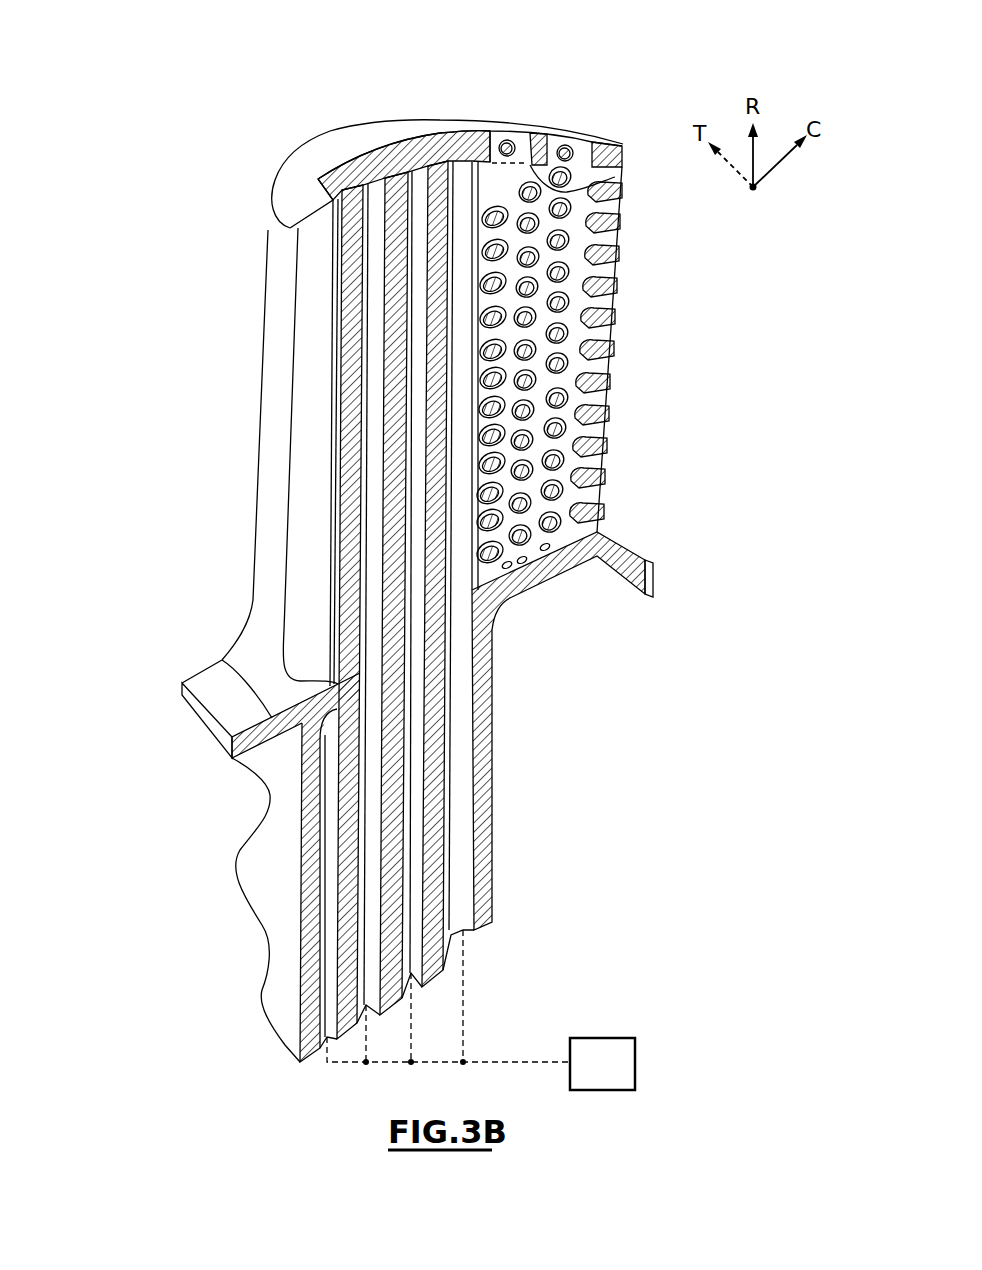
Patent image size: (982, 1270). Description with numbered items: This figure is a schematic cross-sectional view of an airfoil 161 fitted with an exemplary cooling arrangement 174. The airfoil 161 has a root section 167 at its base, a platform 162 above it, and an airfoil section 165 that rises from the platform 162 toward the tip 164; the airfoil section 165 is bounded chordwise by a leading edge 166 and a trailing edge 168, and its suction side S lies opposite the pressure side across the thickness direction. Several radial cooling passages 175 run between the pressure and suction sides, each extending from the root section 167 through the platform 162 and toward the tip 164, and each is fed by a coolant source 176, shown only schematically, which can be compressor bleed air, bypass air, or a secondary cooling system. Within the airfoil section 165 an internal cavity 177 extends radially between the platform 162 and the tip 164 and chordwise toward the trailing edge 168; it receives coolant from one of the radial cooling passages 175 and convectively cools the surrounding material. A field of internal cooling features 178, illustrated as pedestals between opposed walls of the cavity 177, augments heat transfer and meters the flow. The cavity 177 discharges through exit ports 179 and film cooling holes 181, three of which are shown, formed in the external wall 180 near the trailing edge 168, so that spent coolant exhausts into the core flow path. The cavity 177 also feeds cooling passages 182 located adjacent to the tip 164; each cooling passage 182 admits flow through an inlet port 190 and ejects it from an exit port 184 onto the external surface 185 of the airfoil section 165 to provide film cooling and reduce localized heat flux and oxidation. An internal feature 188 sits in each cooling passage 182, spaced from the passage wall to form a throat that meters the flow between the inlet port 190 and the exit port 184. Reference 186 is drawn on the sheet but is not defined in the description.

The airfoil 161 is at (146, 112).
The platform 162 is at (225, 740).
The tip 164 is at (283, 197).
The airfoil section 165 is at (242, 432).
The leading edge 166 is at (264, 288).
The root section 167 is at (272, 998).
The trailing edge 168 is at (612, 320).
The cooling arrangement 174 is at (498, 46).
The radial cooling passage 175 is at (450, 905).
The coolant source 176 is at (627, 1079).
The internal cavity 177 is at (545, 555).
The internal cooling feature 178 is at (565, 430).
The exit port 179 is at (600, 466).
The external wall 180 is at (600, 446).
The film cooling hole 181 is at (508, 570).
The cooling passage 182 is at (518, 142).
The exit port 184 is at (493, 128).
The external surface 185 is at (441, 130).
The tip cap section 186 is at (473, 128).
The internal feature 188 is at (577, 157).
The inlet port 190 is at (612, 178).
The suction side S is at (340, 136).